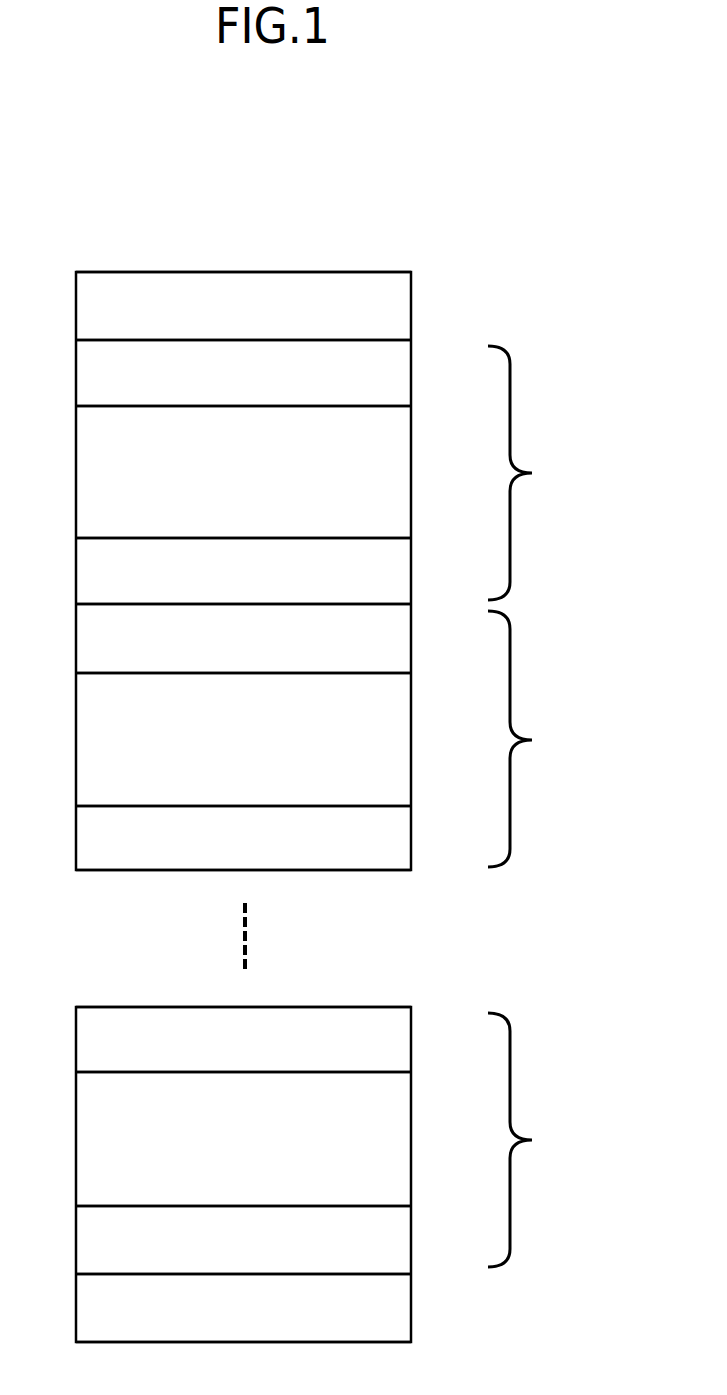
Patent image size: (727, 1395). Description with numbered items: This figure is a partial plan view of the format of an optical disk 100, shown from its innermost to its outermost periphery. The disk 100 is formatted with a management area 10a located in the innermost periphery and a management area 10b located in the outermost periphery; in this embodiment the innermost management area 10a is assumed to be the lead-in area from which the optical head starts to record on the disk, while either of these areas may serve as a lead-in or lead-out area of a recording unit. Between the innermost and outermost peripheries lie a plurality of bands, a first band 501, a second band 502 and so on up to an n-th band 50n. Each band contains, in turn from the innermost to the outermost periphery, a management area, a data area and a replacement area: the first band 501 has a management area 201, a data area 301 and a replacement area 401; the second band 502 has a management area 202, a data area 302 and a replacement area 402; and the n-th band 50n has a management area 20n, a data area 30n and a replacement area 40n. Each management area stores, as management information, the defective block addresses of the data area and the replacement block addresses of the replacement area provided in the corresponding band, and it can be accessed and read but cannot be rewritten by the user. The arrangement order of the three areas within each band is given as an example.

The optical disk 100 is at (272, 254).
The management area 10a is at (243, 306).
The management area 10b is at (243, 1308).
The management area 201 is at (243, 373).
The data area 301 is at (243, 472).
The replacement area 401 is at (243, 571).
The management area 202 is at (243, 638).
The data area 302 is at (243, 739).
The replacement area 402 is at (243, 838).
The management area 20n is at (243, 1039).
The data area 30n is at (243, 1139).
The replacement area 40n is at (243, 1240).
The band 501 is at (540, 473).
The band 502 is at (541, 739).
The band 50n is at (542, 1140).